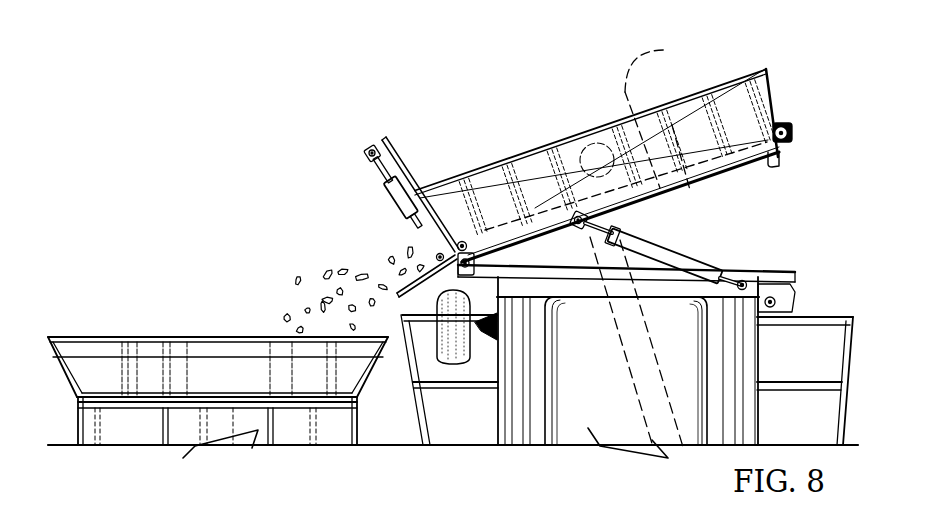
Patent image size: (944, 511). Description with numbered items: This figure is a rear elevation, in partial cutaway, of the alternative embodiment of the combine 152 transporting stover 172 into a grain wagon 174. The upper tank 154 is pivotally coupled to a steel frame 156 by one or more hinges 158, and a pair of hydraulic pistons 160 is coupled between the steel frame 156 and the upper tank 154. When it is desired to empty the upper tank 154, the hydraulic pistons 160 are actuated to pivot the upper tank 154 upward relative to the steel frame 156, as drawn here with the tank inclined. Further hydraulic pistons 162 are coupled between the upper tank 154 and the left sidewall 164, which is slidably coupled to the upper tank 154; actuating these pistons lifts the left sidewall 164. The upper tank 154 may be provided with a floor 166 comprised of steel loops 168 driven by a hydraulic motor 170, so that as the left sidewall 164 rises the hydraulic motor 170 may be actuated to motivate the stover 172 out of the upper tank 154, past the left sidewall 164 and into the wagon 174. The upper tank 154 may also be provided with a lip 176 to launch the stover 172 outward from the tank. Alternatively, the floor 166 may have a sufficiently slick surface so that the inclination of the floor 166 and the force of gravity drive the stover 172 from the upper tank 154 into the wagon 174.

The alternative embodiment combine 152 is at (588, 98).
The upper tank 154 is at (560, 137).
The steel frame 156 is at (527, 212).
The hinges 158 is at (463, 254).
The hydraulic pistons 160 is at (697, 262).
The hydraulic pistons 162 is at (407, 230).
The left sidewall 164 is at (383, 197).
The floor 166 is at (672, 178).
The steel loops 168 is at (658, 69).
The hydraulic motor 170 is at (790, 140).
The stover 172 is at (287, 319).
The grain wagon 174 is at (163, 337).
The lip 176 is at (397, 267).